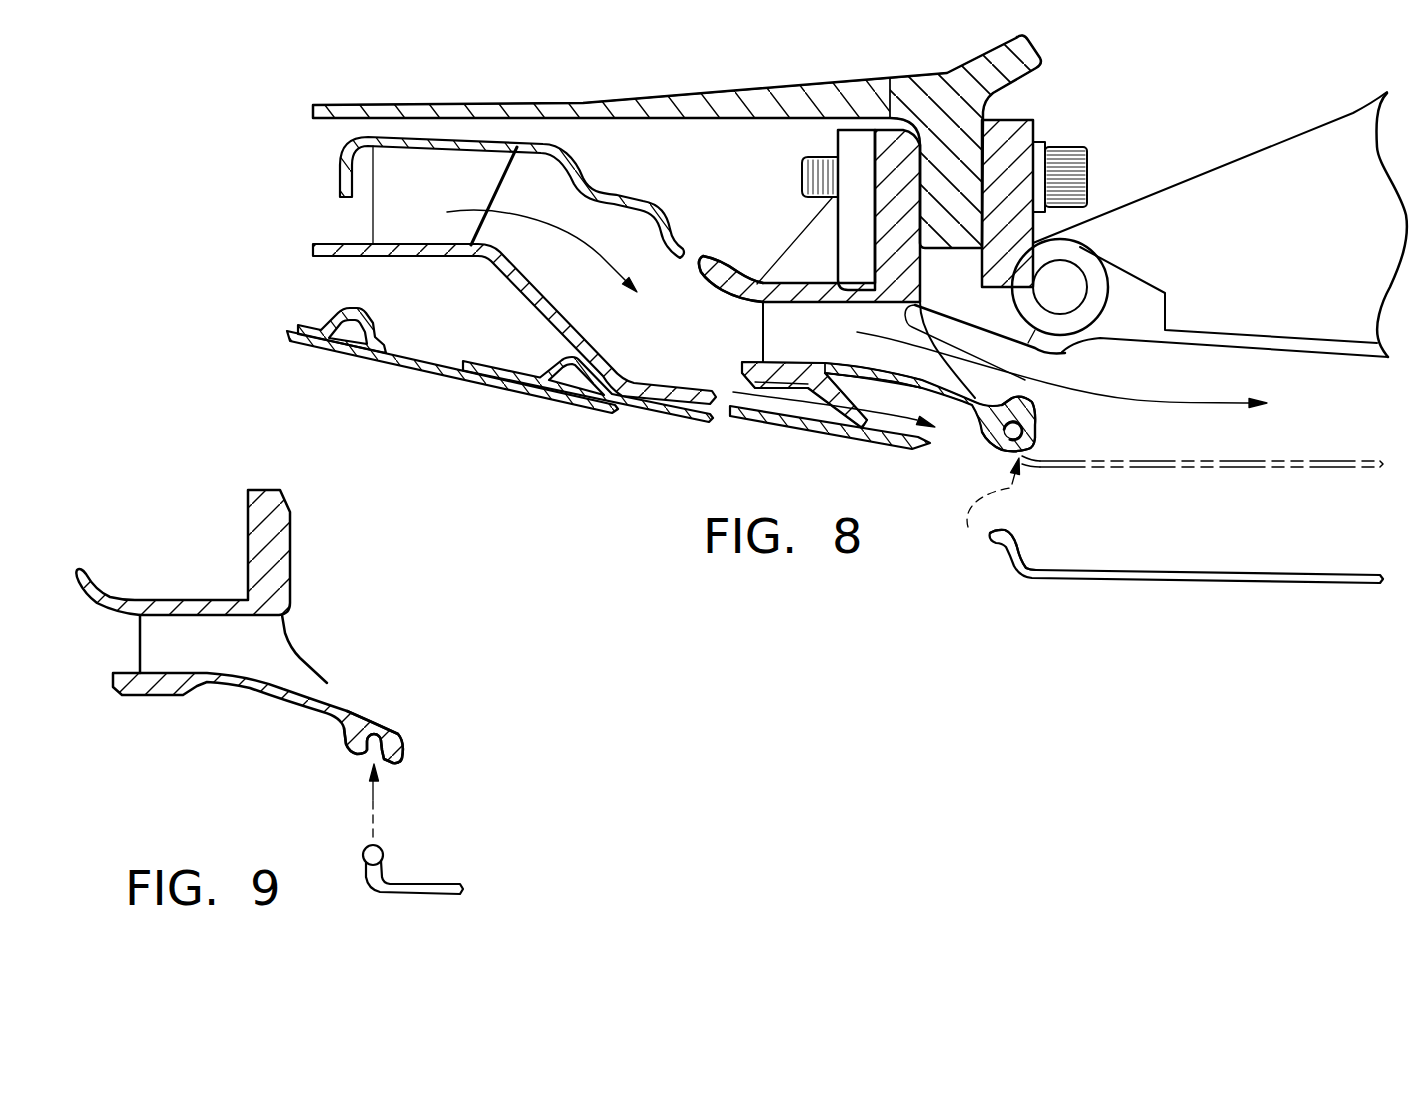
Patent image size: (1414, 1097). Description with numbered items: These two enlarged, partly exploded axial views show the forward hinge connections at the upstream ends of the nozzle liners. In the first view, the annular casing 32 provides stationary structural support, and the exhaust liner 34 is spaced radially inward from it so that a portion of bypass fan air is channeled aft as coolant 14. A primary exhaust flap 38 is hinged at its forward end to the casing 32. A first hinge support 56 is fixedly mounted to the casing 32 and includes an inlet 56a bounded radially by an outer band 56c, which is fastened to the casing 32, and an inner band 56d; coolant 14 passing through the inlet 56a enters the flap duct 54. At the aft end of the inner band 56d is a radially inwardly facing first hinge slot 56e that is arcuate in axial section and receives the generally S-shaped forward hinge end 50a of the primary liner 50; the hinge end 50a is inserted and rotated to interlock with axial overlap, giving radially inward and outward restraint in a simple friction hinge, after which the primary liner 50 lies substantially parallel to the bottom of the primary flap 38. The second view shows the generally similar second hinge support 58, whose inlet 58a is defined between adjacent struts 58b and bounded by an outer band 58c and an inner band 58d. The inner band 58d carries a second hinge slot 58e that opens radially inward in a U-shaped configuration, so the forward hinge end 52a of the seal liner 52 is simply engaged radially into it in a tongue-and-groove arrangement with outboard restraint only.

In FIG. 8, the coolant 14 is at (572, 245).
In FIG. 8, the casing 32 is at (963, 66).
In FIG. 8, the exhaust liner 34 is at (443, 357).
In FIG. 8, the primary exhaust flap 38 is at (1222, 251).
In FIG. 8, the primary liner 50 is at (1200, 470).
In FIG. 8, the forward hinge end 50a is at (1030, 548).
In FIG. 9, the seal liner 52 is at (436, 884).
In FIG. 9, the forward hinge end 52a is at (390, 850).
In FIG. 8, the flap duct 54 is at (1357, 416).
In FIG. 8, the first hinge support 56 is at (750, 240).
In FIG. 8, the inlet 56a is at (828, 352).
In FIG. 8, the outer band 56c is at (708, 284).
In FIG. 8, the inner band 56d is at (1013, 400).
In FIG. 8, the first hinge slot 56e is at (997, 452).
In FIG. 9, the second hinge support 58 is at (92, 552).
In FIG. 9, the inlet 58a is at (230, 657).
In FIG. 9, the strut 58b is at (140, 638).
In FIG. 9, the outer band 58c is at (231, 602).
In FIG. 9, the inner band 58d is at (235, 691).
In FIG. 9, the second hinge slot 58e is at (372, 756).